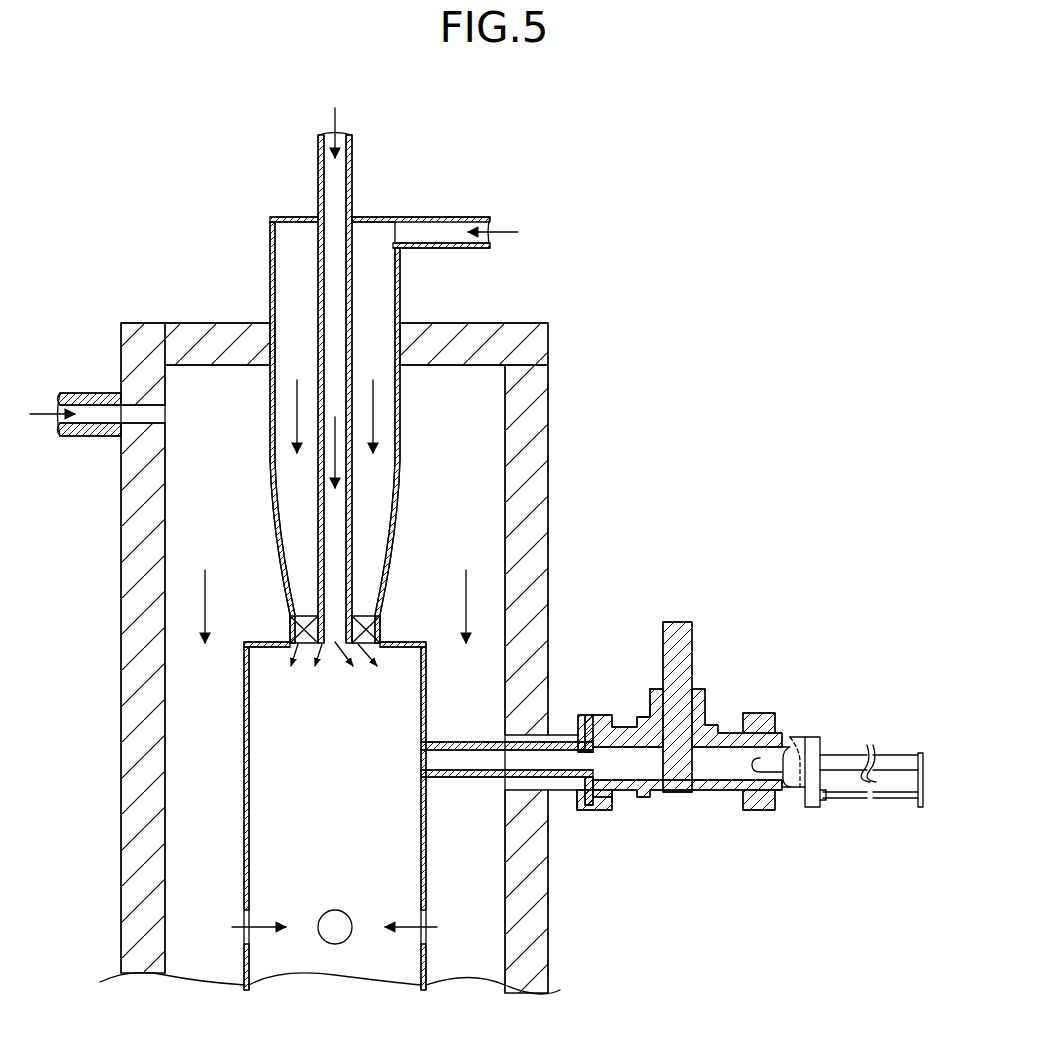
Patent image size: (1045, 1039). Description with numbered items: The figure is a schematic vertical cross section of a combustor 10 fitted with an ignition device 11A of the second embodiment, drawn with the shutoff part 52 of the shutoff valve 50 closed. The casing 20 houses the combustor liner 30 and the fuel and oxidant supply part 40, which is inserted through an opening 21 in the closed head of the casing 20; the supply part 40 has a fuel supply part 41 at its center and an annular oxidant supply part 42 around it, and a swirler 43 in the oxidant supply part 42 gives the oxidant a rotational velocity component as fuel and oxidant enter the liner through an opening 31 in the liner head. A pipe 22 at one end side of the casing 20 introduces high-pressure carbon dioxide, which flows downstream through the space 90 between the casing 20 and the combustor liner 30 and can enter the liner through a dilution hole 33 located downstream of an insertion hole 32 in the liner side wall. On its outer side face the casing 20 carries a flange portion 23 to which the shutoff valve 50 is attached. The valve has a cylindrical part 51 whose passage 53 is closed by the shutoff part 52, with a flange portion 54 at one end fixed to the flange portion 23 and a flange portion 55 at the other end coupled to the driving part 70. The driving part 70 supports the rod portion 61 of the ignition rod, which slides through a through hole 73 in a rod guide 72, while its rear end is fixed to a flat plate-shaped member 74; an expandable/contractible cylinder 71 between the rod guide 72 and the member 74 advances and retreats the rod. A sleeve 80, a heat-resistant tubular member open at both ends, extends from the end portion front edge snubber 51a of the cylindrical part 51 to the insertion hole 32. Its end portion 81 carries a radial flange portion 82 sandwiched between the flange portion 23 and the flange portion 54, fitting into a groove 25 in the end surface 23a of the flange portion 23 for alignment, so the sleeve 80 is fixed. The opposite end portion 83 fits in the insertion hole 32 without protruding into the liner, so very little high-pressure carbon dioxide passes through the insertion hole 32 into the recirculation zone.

The combustor 10 is at (686, 398).
The ignition device 11A is at (768, 918).
The casing 20 is at (520, 526).
The opening 21 is at (280, 343).
The pipe 22 is at (85, 398).
The flange portion 23 is at (580, 713).
The end surface 23a is at (598, 729).
The groove 25 is at (618, 727).
The combustor liner 30 is at (426, 866).
The opening 31 is at (372, 632).
The insertion hole 32 is at (421, 746).
The dilution hole 33 is at (334, 920).
The fuel and oxidant supply part 40 is at (233, 505).
The fuel supply part 41 is at (335, 518).
The oxidant supply part 42 is at (300, 548).
The swirler 43 is at (292, 630).
The shutoff valve 50 is at (692, 862).
The cylindrical part 51 is at (636, 792).
The end portion front edge snubber 51a is at (590, 732).
The shutoff part 52 is at (683, 647).
The passage 53 is at (720, 748).
The flange portion 54 is at (590, 800).
The flange portion 55 is at (750, 811).
The rod portion 61 is at (843, 760).
The driving part 70 is at (860, 862).
The expandable/contractible cylinder 71 is at (850, 800).
The rod guide 72 is at (811, 808).
The through hole 73 is at (815, 742).
The flat plate-shaped member 74 is at (921, 808).
The sleeve 80 is at (553, 790).
The end portion 81 is at (623, 784).
The flange portion 82 is at (607, 792).
The end portion 83 is at (421, 772).
The space 90 is at (465, 950).